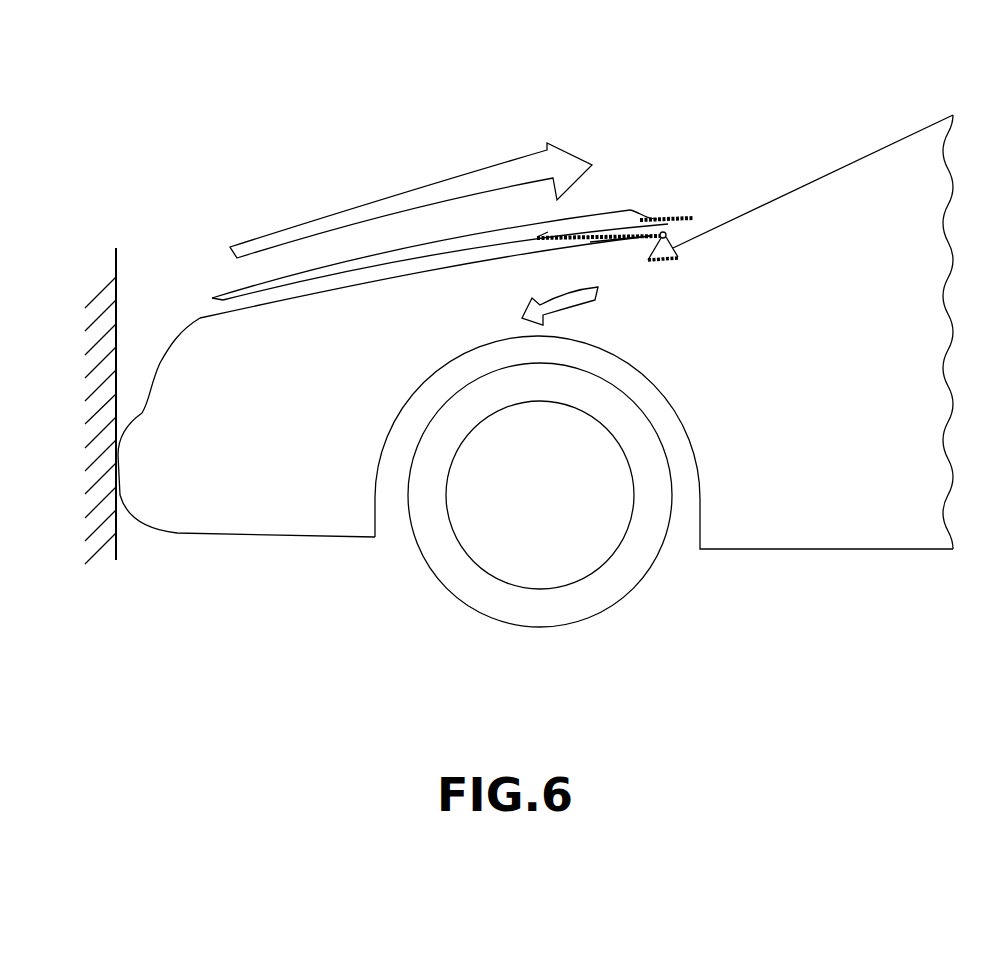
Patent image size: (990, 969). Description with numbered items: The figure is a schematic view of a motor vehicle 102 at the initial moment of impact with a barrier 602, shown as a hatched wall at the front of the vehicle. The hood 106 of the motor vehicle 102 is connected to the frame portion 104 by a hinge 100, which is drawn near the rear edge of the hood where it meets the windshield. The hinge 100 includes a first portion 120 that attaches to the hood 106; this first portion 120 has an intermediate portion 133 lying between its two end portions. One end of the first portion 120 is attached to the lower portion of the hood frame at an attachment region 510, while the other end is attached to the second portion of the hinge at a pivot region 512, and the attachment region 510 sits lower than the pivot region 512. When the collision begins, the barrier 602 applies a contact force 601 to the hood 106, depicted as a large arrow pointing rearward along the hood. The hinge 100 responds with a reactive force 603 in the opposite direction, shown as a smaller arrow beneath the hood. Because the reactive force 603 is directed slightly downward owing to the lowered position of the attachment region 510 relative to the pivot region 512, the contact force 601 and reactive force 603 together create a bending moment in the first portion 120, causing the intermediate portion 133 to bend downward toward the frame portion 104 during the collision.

The hinge 100 is at (487, 250).
The motor vehicle 102 is at (790, 98).
The frame portion 104 is at (485, 263).
The hood 106 is at (402, 258).
The first portion 120 is at (603, 237).
The intermediate portion 133 is at (633, 237).
The attachment region 510 is at (577, 242).
The pivot region 512 is at (673, 247).
The contact force 601 is at (413, 191).
The barrier 602 is at (117, 297).
The reactive force 603 is at (578, 303).